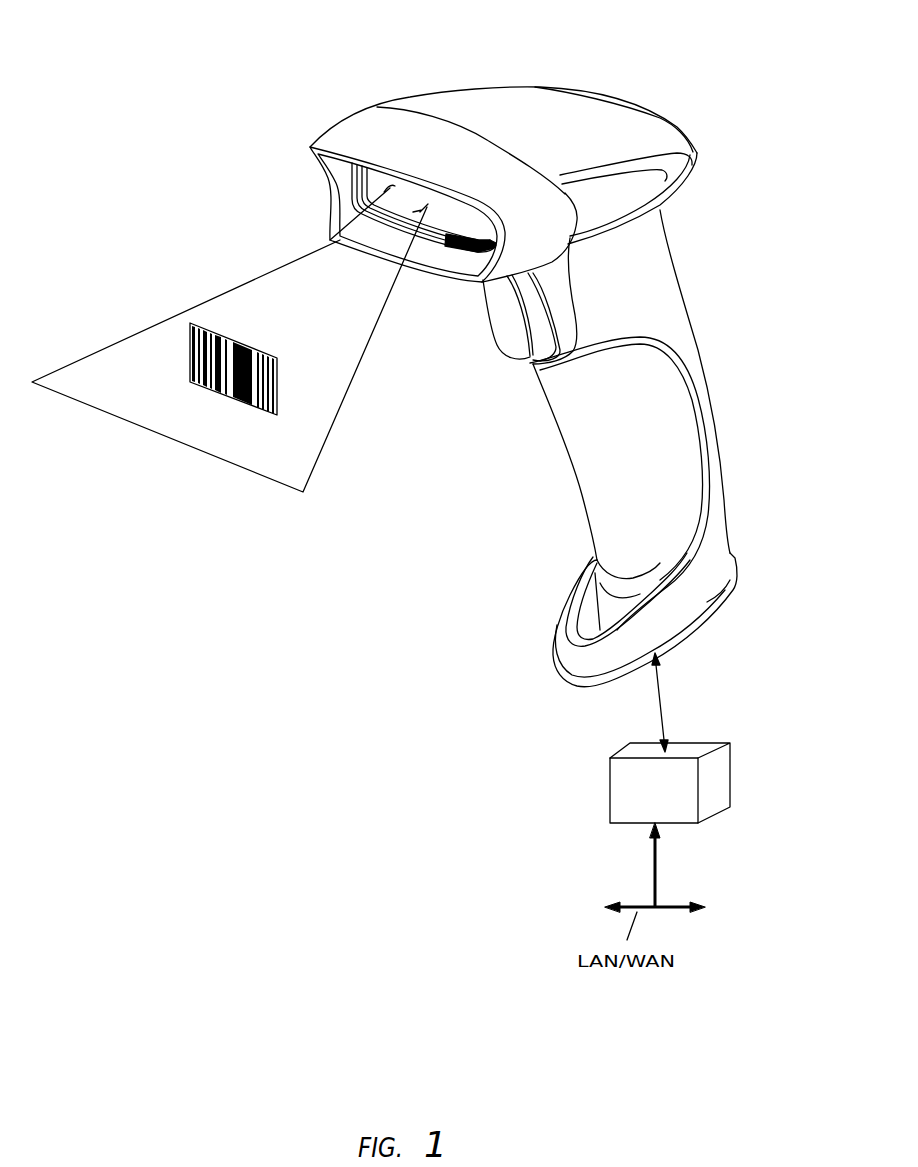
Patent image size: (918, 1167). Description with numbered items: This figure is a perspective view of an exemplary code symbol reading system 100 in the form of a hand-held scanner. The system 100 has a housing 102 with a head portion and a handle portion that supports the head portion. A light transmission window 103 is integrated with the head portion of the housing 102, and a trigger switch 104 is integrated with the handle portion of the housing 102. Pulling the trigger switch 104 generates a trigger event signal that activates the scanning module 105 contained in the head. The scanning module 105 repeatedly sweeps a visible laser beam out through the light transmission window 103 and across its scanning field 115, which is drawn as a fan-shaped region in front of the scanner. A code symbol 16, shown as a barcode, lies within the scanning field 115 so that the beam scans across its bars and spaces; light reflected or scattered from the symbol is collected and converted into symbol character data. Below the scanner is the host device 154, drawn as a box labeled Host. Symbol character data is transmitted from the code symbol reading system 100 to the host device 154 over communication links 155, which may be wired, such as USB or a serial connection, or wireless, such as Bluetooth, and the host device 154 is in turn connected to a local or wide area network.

The code symbol reading system 100 is at (511, 348).
The scanning module 105 is at (526, 138).
The light transmission window 103 is at (353, 207).
The trigger switch 104 is at (503, 330).
The housing 102 is at (694, 422).
The scanning field 115 is at (150, 432).
The code symbol 16 is at (278, 401).
The communication links 155 is at (662, 698).
The host device 154 is at (608, 790).